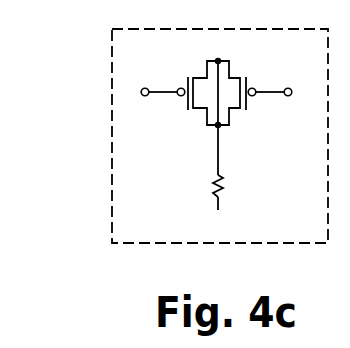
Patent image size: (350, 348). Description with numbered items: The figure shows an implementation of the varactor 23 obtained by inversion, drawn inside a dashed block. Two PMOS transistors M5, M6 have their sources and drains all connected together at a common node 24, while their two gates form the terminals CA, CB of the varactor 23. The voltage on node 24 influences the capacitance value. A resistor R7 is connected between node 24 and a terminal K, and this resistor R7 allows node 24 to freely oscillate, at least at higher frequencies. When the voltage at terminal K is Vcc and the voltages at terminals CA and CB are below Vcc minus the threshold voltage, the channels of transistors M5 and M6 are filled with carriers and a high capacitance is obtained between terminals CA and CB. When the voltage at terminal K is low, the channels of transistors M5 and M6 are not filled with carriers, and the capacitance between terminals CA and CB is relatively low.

The varactor 23 is at (112, 213).
The node 24 is at (216, 138).
The PMOS transistor M5 is at (196, 94).
The PMOS transistor M6 is at (243, 94).
The resistor R7 is at (204, 185).
The terminal CA is at (146, 92).
The terminal CB is at (289, 92).
The terminal K is at (226, 211).